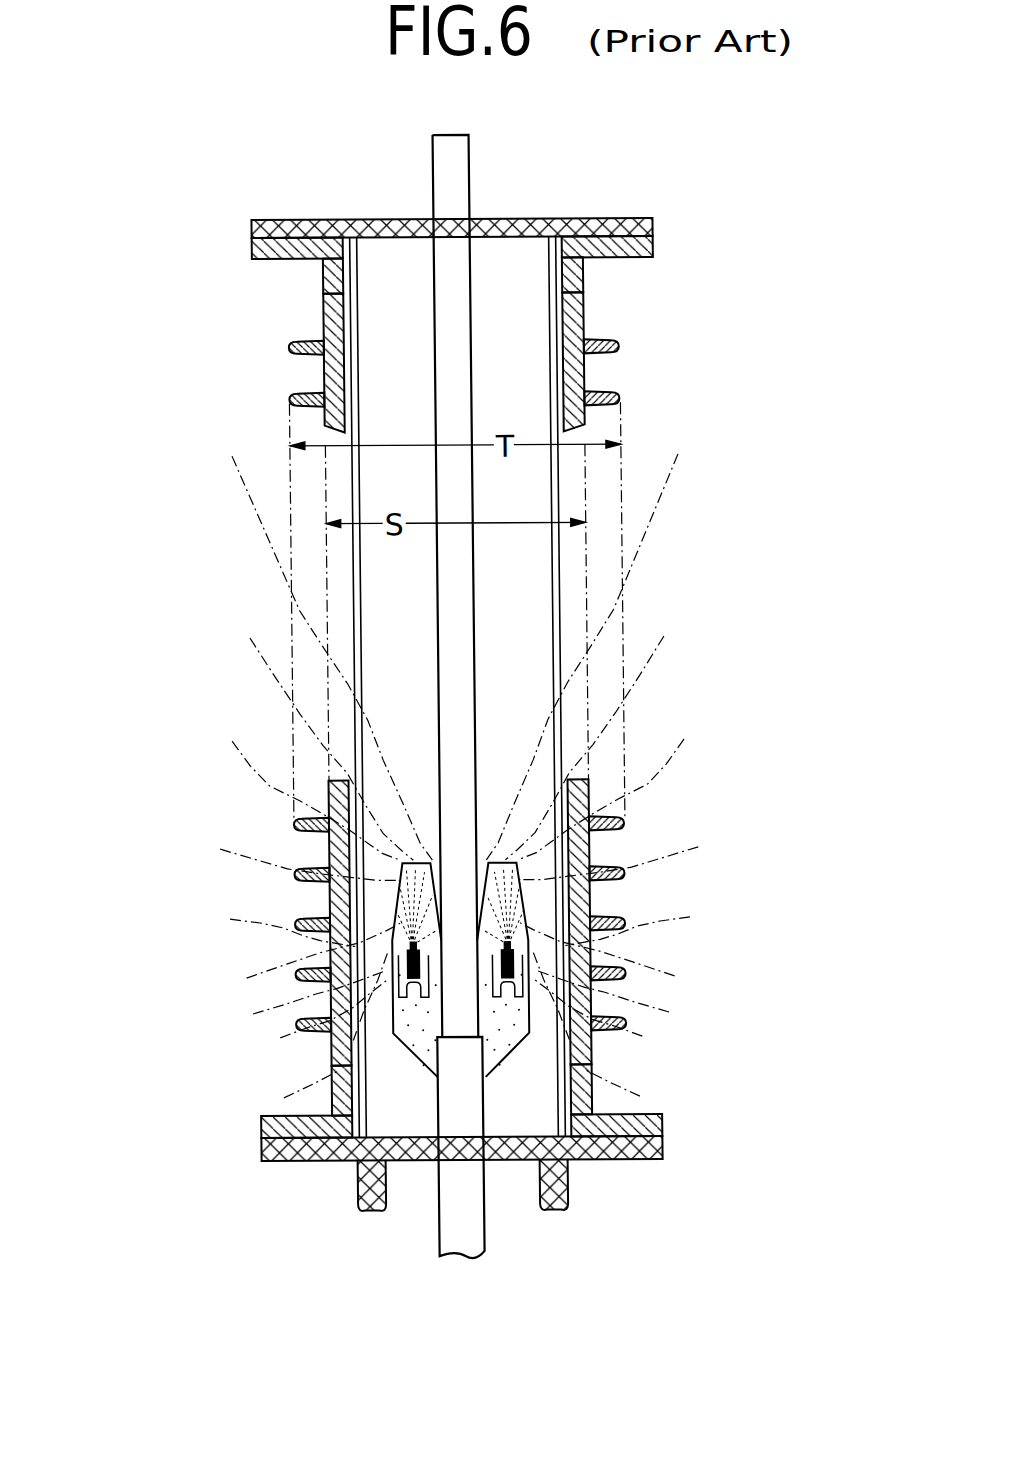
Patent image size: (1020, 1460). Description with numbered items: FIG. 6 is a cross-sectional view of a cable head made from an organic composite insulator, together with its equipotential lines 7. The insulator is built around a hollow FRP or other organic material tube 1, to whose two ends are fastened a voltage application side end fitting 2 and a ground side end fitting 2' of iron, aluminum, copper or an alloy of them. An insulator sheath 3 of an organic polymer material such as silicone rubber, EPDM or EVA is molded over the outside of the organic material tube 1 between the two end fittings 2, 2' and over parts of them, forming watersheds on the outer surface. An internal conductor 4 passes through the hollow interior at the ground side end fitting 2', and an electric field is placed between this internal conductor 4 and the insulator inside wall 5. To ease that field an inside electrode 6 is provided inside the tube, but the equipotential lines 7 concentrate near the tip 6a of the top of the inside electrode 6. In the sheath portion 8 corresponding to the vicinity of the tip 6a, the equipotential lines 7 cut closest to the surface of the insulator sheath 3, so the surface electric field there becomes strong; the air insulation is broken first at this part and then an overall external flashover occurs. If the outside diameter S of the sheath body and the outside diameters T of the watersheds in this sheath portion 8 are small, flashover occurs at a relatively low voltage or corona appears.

The organic material tube 1 is at (549, 268).
The voltage application side end fitting 2 is at (448, 256).
The ground side end fitting 2' is at (400, 1138).
The insulator sheath 3 is at (612, 342).
The internal conductor 4 is at (436, 1238).
The insulator inside wall 5 is at (549, 1097).
The inside electrode 6 is at (519, 973).
The tip of the top of the inside electrode 6a is at (378, 957).
The equipotential lines 7 is at (678, 750).
The sheath portion 8 is at (760, 852).